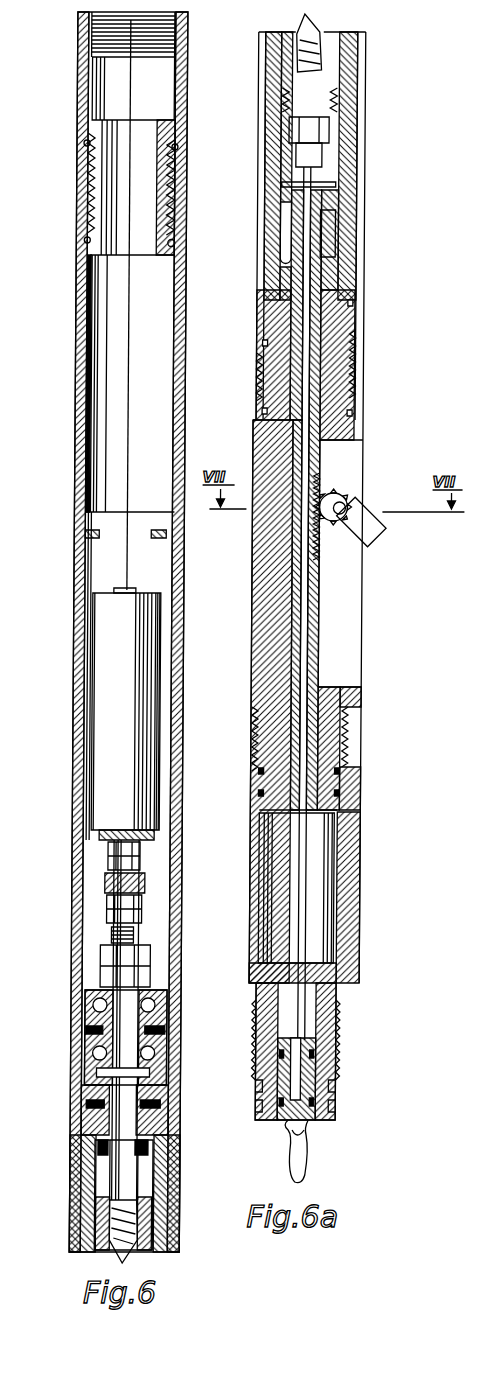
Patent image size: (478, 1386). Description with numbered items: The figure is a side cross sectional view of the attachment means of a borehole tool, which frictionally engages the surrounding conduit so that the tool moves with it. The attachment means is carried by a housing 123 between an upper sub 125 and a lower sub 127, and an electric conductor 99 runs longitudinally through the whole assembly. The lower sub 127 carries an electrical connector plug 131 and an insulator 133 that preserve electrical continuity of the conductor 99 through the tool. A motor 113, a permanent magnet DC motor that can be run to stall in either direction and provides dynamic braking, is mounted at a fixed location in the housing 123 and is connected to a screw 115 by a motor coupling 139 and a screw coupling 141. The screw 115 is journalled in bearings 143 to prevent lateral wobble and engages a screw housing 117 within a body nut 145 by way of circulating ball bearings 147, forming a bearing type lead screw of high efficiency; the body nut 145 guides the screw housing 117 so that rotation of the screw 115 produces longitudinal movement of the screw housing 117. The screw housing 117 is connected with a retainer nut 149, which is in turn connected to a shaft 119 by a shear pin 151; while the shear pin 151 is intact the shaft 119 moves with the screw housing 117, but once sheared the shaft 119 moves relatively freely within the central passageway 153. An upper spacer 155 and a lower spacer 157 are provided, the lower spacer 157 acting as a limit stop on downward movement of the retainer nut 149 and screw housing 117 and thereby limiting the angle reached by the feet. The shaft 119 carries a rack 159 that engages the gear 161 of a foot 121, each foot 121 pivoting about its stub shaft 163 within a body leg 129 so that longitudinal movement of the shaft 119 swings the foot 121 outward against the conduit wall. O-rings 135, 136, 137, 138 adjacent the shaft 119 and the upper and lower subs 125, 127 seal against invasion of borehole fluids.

In FIG. 6, the electric conductor 99 is at (131, 398).
In FIG. 6A, the electric conductor 99 is at (310, 1005).
In FIG. 6, the motor 113 is at (103, 676).
In FIG. 6, the screw 115 is at (125, 1192).
In FIG. 6, the screw housing 117 is at (163, 1230).
In FIG. 6A, the screw housing 117 is at (328, 44).
In FIG. 6A, the shaft 119 is at (320, 284).
In FIG. 6A, the foot 121 is at (360, 495).
In FIG. 6, the housing 123 is at (82, 312).
In FIG. 6, the upper sub 125 is at (86, 121).
In FIG. 6A, the lower sub 127 is at (353, 892).
In FIG. 6A, the body leg 129 is at (262, 614).
In FIG. 6A, the electrical connector plug 131 is at (312, 1162).
In FIG. 6A, the insulator 133 is at (315, 1080).
In FIG. 6A, the o-ring 135 is at (350, 802).
In FIG. 6A, the o-ring 136 is at (325, 708).
In FIG. 6A, the o-ring 137 is at (335, 396).
In FIG. 6, the o-ring 138 is at (176, 245).
In FIG. 6, the motor coupling 139 is at (116, 868).
In FIG. 6, the screw coupling 141 is at (150, 897).
In FIG. 6, the bearings 143 is at (175, 1007).
In FIG. 6, the body nut 145 is at (172, 1184).
In FIG. 6, the circulating ball bearings 147 is at (112, 1222).
In FIG. 6A, the retainer nut 149 is at (333, 148).
In FIG. 6A, the shear pin 151 is at (340, 189).
In FIG. 6A, the central passageway 153 is at (292, 152).
In FIG. 6, the upper spacer 155 is at (108, 1145).
In FIG. 6A, the lower spacer 157 is at (338, 249).
In FIG. 6A, the rack 159 is at (330, 552).
In FIG. 6A, the gear 161 is at (345, 478).
In FIG. 6A, the stub shaft 163 is at (375, 542).